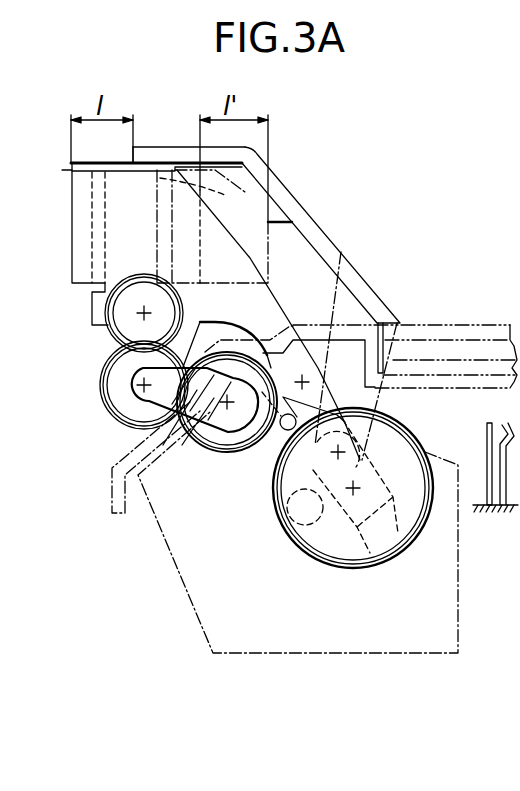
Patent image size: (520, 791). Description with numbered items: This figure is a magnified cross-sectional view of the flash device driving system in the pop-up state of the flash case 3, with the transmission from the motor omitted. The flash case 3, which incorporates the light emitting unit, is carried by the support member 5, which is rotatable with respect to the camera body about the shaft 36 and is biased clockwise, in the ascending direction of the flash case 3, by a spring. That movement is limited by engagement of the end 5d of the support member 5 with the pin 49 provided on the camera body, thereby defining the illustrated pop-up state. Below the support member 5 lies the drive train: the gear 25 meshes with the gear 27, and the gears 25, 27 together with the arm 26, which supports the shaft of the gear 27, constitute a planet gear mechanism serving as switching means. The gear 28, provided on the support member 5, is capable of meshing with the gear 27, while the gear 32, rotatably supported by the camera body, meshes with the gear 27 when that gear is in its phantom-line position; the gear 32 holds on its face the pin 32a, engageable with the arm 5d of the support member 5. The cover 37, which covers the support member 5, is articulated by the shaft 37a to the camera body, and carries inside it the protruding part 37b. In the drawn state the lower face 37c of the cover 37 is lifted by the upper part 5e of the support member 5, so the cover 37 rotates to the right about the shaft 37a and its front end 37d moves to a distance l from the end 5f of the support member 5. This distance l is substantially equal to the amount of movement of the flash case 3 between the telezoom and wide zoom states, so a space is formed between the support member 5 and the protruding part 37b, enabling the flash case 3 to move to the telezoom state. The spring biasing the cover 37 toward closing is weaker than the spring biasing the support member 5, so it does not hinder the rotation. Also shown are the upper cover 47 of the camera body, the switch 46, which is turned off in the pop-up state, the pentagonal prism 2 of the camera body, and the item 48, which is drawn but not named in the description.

The pentagonal prism 2 is at (177, 573).
The flash case 3 is at (245, 188).
The support member 5 is at (270, 300).
The end of support member 5d is at (363, 486).
The upper part of support member 5e is at (100, 167).
The end of support member 5f is at (72, 166).
The gear 25 is at (220, 437).
The arm 26 is at (207, 420).
The gear 27 is at (100, 398).
The gear 28 is at (104, 333).
The gear 32 is at (422, 533).
The pin 32a is at (312, 530).
The shaft 36 is at (305, 380).
The cover 37 is at (145, 150).
The shaft 37a is at (339, 453).
The protruding part 37b is at (268, 215).
The lower face of cover 37c is at (163, 160).
The front end of cover 37d is at (133, 152).
The switch 46 is at (484, 434).
The upper cover 47 is at (110, 475).
The sheet stack 48 is at (437, 335).
The pin 49 is at (282, 430).